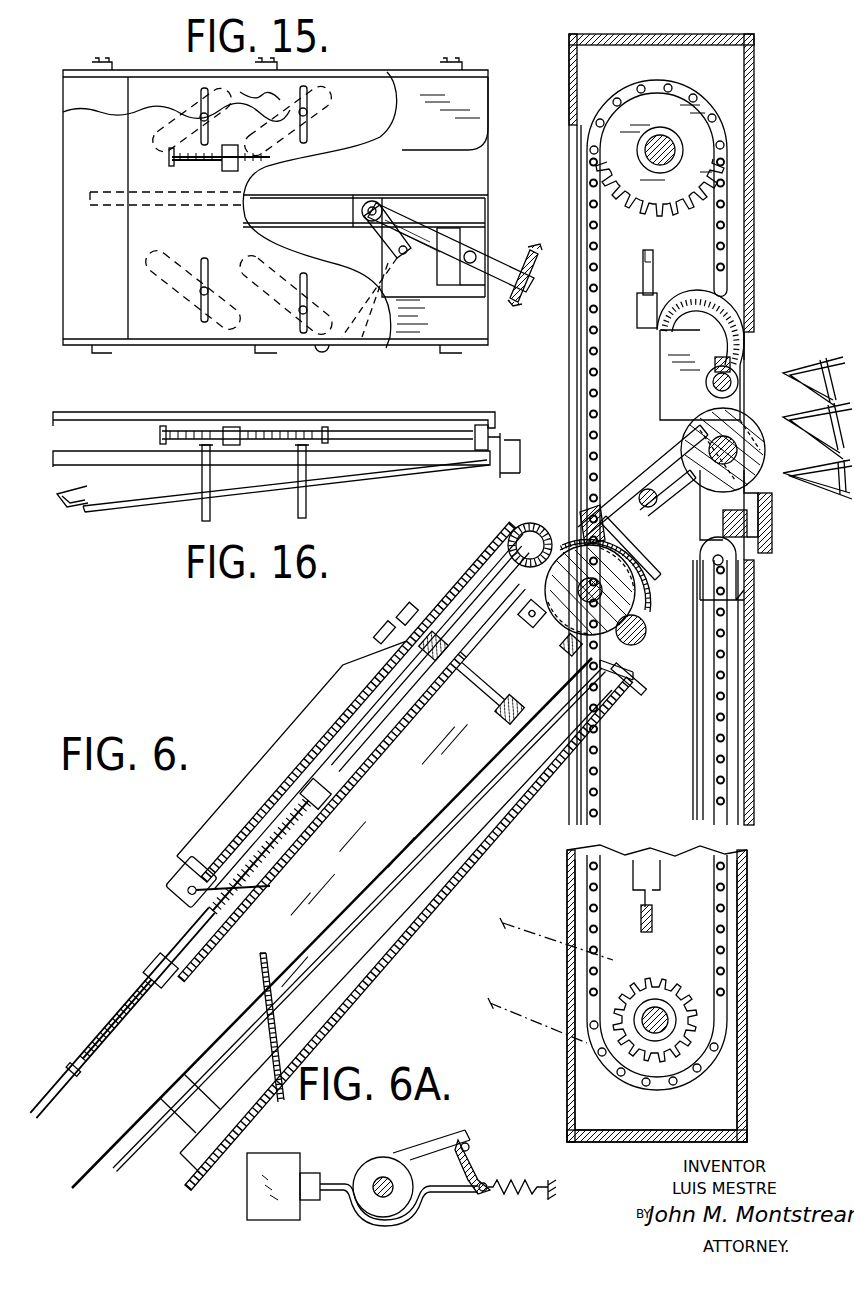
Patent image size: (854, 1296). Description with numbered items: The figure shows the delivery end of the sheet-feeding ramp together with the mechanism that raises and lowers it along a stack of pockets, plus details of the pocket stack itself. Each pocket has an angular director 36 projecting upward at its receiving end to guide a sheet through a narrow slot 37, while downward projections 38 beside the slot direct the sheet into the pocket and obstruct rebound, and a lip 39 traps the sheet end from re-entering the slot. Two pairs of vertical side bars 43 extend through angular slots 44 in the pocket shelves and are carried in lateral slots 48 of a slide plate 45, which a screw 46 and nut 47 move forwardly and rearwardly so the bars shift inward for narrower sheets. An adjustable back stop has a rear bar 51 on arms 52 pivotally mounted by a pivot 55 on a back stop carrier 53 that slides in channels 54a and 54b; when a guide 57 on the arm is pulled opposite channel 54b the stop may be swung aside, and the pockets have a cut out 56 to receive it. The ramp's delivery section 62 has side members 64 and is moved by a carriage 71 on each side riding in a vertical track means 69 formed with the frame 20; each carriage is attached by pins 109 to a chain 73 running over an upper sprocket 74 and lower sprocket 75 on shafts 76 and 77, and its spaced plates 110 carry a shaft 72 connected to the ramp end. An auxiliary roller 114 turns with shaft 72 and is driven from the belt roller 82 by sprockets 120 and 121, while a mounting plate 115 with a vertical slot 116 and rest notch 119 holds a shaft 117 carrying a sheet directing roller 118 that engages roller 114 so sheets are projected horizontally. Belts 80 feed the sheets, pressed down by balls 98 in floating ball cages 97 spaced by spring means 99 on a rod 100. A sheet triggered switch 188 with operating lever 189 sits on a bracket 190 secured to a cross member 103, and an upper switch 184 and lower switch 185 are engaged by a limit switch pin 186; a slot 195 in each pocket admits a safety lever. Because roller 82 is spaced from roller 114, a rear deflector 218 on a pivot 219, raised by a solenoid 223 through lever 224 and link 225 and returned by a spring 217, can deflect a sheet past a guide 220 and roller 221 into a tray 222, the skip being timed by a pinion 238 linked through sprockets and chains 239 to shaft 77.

In FIG. 16, the frame 20 is at (170, 505).
In FIG. 6, the frame 20 is at (569, 72).
In FIG. 16, the angular director 36 is at (60, 500).
In FIG. 6, the angular director 36 is at (808, 386).
In FIG. 6, the narrow slot 37 is at (814, 458).
In FIG. 16, the projections 38 is at (97, 510).
In FIG. 6, the lip 39 is at (833, 362).
In FIG. 15, the vertical side bars 43 is at (204, 112).
In FIG. 16, the vertical side bars 43 is at (297, 498).
In FIG. 15, the angular slot 44 is at (197, 114).
In FIG. 15, the slide plate 45 is at (373, 92).
In FIG. 16, the slide plate 45 is at (130, 450).
In FIG. 15, the screw 46 is at (170, 160).
In FIG. 16, the screw 46 is at (298, 430).
In FIG. 15, the nut 47 is at (225, 170).
In FIG. 16, the nut 47 is at (232, 427).
In FIG. 15, the lateral slots 48 is at (208, 121).
In FIG. 15, the rear bar 51 is at (512, 305).
In FIG. 15, the arms 52 is at (494, 266).
In FIG. 15, the back stop carrier 53 is at (356, 208).
In FIG. 15, the channel 54a is at (447, 189).
In FIG. 15, the channel 54b is at (488, 218).
In FIG. 15, the pivot 55 is at (380, 206).
In FIG. 15, the cut out 56 is at (447, 133).
In FIG. 15, the guide 57 is at (462, 257).
In FIG. 6, the delivery section 62 is at (210, 812).
In FIG. 6, the side members 64 is at (647, 586).
In FIG. 6, the vertical track means 69 is at (700, 670).
In FIG. 6, the carriage 71 is at (757, 328).
In FIG. 6, the shaft 72 is at (705, 418).
In FIG. 6, the chain 73 is at (588, 372).
In FIG. 6, the upper sprocket 74 is at (708, 160).
In FIG. 6, the lower sprocket 75 is at (697, 993).
In FIG. 6, the shaft 76 is at (675, 145).
In FIG. 6, the lower sprocket shaft 77 is at (642, 1023).
In FIG. 6, the belts 80 is at (153, 1117).
In FIG. 6, the roller 82 is at (563, 622).
In FIG. 6, the floating ball cages 97 is at (146, 973).
In FIG. 6, the ball 98 is at (153, 990).
In FIG. 6, the spring means 99 is at (110, 1010).
In FIG. 6, the rod 100 is at (82, 1040).
In FIG. 6, the cross member 103 is at (433, 635).
In FIG. 6, the pins 109 is at (744, 292).
In FIG. 6, the spaced plates 110 is at (744, 558).
In FIG. 6, the auxiliary roller 114 is at (686, 436).
In FIG. 6, the directing roller mounting plate 115 is at (670, 373).
In FIG. 6, the vertical slot 116 is at (703, 340).
In FIG. 6, the shaft 117 is at (732, 378).
In FIG. 6, the sheet directing roller 118 is at (739, 382).
In FIG. 6, the rest notch 119 is at (680, 301).
In FIG. 6, the sprocket 120 is at (646, 628).
In FIG. 6, the sprocket 121 is at (695, 480).
In FIG. 6, the upper switch 184 is at (638, 296).
In FIG. 6, the lower switch 185 is at (629, 896).
In FIG. 6, the limit switch pin 186 is at (650, 508).
In FIG. 6, the sheet triggered switch 188 is at (177, 871).
In FIG. 6, the operating lever 189 is at (270, 887).
In FIG. 6, the bracket 190 is at (333, 723).
In FIG. 6, the slot 195 is at (793, 490).
In FIG. 6A, the spring 217 is at (541, 1180).
In FIG. 6, the rear deflector 218 is at (575, 527).
In FIG. 6A, the rear deflector 218 is at (416, 1143).
In FIG. 6, the pivot 219 is at (582, 512).
In FIG. 6A, the pivot 219 is at (473, 1141).
In FIG. 6, the guide 220 is at (612, 538).
In FIG. 6, the roller 221 is at (646, 638).
In FIG. 6, the tray 222 is at (463, 867).
In FIG. 6A, the solenoid 223 is at (290, 1213).
In FIG. 6A, the lever 224 is at (484, 1164).
In FIG. 6A, the link 225 is at (417, 1214).
In FIG. 6, the pinion 238 is at (613, 1008).
In FIG. 6, the sprockets and chains 239 is at (550, 980).